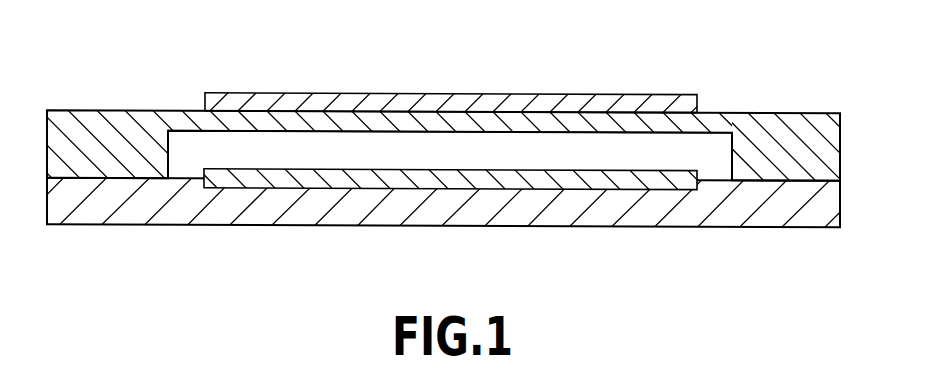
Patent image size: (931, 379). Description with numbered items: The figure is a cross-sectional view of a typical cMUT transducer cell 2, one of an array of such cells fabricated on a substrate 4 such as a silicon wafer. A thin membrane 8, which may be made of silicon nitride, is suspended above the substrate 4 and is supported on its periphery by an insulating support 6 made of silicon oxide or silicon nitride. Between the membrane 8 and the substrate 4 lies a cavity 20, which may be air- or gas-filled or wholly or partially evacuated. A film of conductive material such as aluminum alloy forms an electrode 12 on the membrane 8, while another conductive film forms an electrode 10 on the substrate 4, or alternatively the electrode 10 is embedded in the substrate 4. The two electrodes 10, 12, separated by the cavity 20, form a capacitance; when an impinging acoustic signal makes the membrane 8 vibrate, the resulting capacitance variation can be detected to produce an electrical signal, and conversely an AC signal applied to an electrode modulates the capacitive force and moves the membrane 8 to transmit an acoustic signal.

The cMUT transducer cell 2 is at (453, 153).
The substrate 4 is at (445, 202).
The insulating support 6 is at (453, 123).
The membrane 8 is at (598, 117).
The electrode 10 is at (628, 185).
The electrode 12 is at (240, 92).
The cavity 20 is at (411, 146).